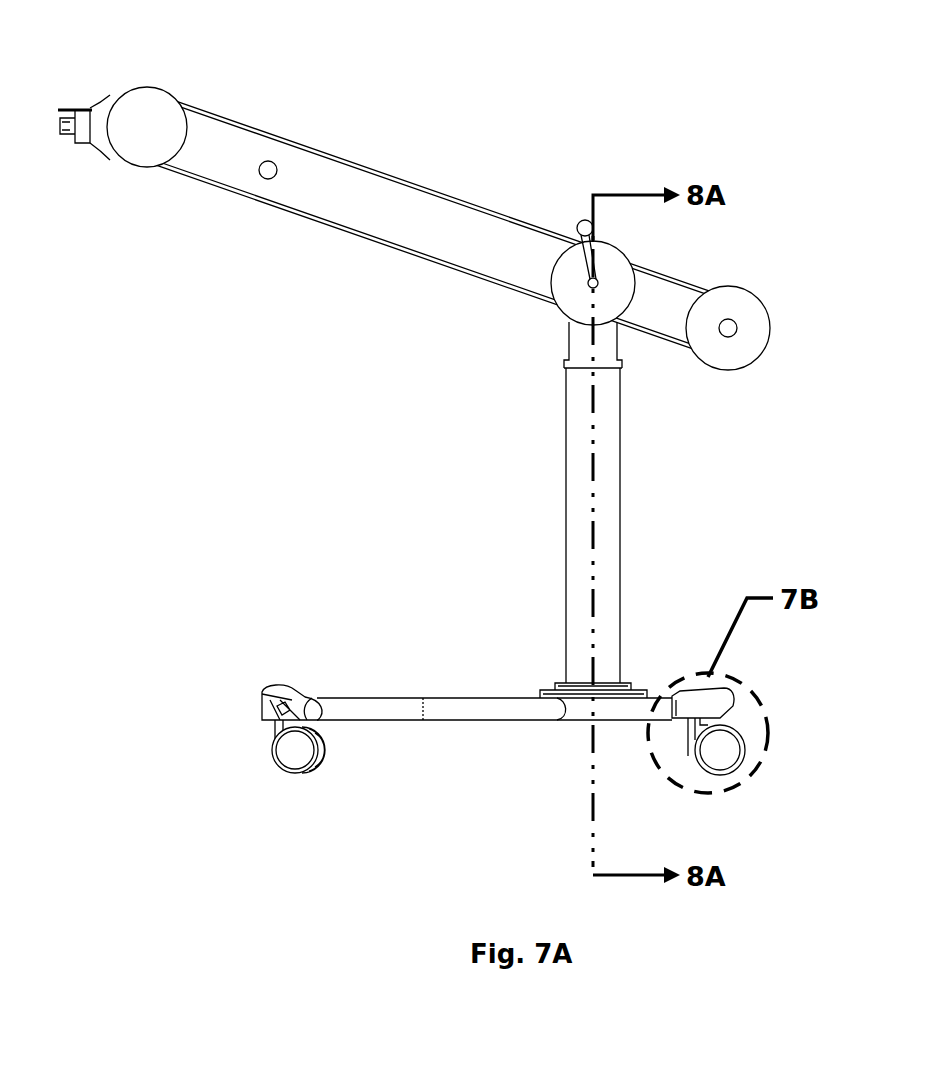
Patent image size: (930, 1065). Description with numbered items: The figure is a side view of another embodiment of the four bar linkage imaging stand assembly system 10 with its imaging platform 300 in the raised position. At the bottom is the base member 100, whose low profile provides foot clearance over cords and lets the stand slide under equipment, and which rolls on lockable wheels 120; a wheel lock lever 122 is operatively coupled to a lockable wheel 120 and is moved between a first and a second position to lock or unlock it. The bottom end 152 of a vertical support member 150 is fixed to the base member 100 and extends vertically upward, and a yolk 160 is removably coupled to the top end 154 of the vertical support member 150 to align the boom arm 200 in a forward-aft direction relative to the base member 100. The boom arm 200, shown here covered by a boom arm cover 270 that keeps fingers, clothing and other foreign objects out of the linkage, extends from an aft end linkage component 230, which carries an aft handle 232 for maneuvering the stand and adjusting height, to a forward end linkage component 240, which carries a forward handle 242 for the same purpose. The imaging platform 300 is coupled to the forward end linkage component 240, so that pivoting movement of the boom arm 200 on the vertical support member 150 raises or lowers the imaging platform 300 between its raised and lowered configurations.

The imaging stand assembly system 10 is at (366, 79).
The base member 100 is at (405, 697).
The lockable wheel 120 is at (300, 774).
The wheel lock lever 122 is at (290, 688).
The vertical support member 150 is at (622, 494).
The bottom end 152 is at (623, 677).
The top end 154 is at (565, 372).
The yolk 160 is at (617, 268).
The boom arm 200 is at (419, 185).
The aft end linkage component 230 is at (730, 286).
The aft handle 232 is at (729, 338).
The forward end linkage component 240 is at (148, 115).
The forward handle 242 is at (266, 173).
The boom arm cover 270 is at (462, 228).
The imaging platform 300 is at (72, 112).